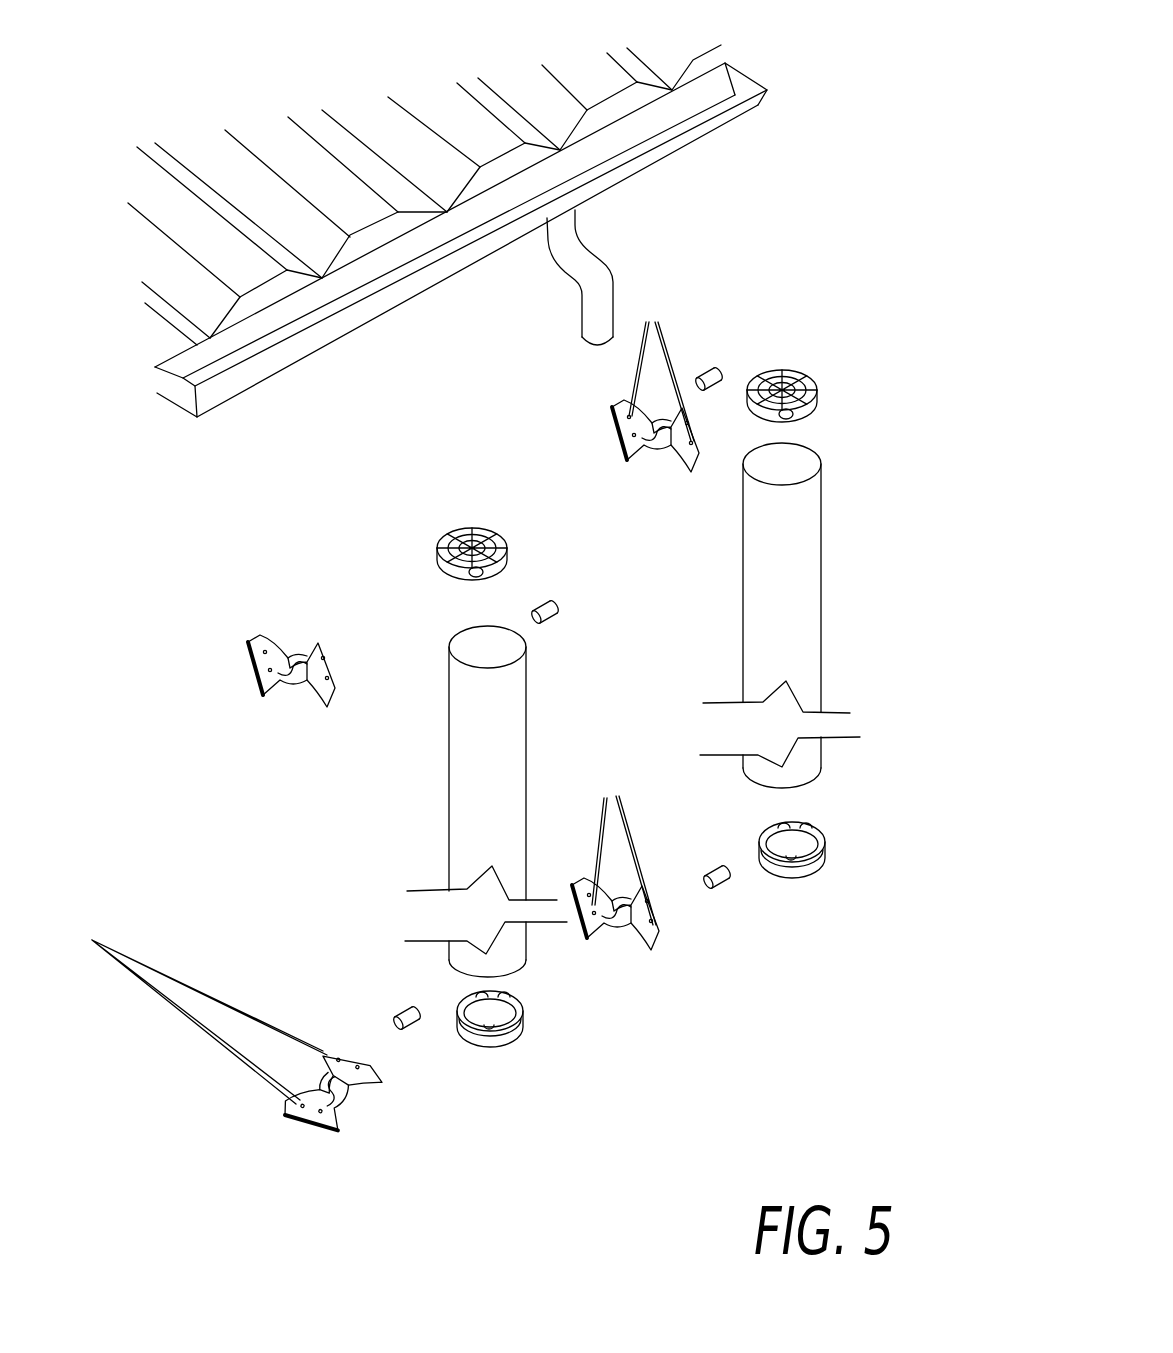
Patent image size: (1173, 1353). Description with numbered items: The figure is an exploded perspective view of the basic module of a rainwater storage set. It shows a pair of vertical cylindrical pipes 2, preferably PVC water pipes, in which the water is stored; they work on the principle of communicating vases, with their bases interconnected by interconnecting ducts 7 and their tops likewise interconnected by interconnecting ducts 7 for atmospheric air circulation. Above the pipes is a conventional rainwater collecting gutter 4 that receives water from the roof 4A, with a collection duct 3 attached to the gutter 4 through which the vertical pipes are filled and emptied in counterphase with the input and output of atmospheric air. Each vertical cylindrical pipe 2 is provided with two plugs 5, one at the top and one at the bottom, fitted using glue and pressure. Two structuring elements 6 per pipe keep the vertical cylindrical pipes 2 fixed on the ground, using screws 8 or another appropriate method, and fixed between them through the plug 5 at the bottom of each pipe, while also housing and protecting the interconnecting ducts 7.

The vertical cylindrical pipe 2 is at (788, 551).
The collection duct 3 is at (563, 233).
The gutter 4 is at (717, 95).
The roof 4A is at (265, 187).
The plug 5 is at (817, 388).
The structuring element 6 is at (240, 660).
The interconnecting duct 7 is at (715, 363).
The screw 8 is at (656, 322).